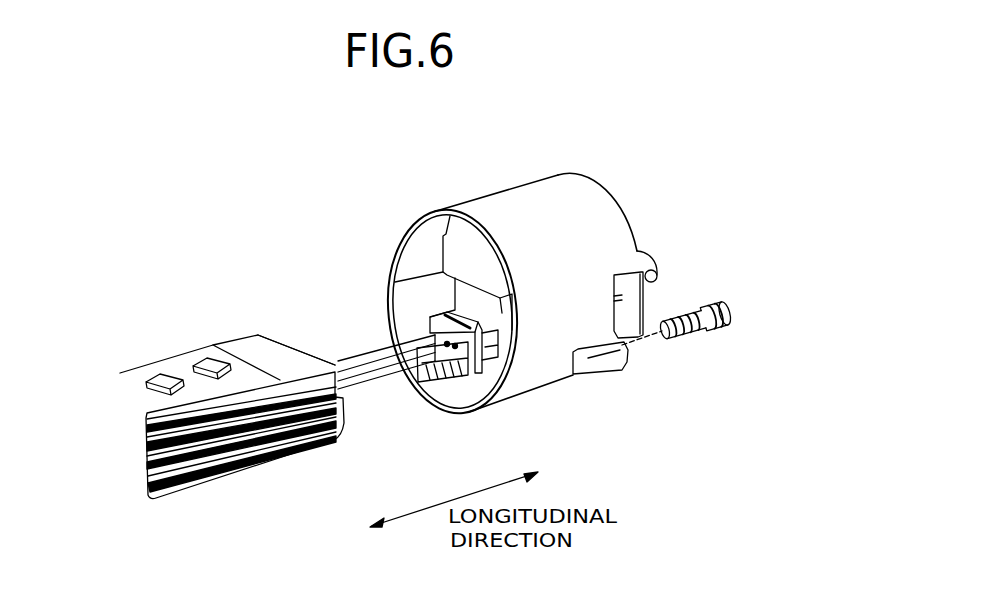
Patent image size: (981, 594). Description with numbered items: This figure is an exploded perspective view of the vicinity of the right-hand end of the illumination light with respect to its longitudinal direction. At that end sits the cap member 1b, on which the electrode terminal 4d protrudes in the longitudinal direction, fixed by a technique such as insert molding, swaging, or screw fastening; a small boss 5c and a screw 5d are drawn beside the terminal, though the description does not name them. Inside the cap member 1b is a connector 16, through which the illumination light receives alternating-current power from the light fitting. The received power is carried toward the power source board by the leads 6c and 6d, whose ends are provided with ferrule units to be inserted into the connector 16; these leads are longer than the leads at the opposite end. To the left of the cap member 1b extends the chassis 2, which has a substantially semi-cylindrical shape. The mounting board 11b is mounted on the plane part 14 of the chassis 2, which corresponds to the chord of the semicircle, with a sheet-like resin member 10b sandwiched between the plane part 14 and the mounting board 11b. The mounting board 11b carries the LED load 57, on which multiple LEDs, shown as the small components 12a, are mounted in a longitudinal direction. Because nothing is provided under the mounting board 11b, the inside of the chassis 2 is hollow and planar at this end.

The cap member 1b is at (522, 203).
The connector 16 is at (450, 313).
The lead 6d is at (393, 377).
The lead 6c is at (358, 353).
The boss 5c is at (641, 252).
The electrode terminal 4d is at (652, 272).
The screw 5d is at (697, 333).
The LED load 57 is at (213, 384).
The chassis 2 is at (152, 494).
The mounting board 11b is at (135, 385).
The plane part 14 is at (240, 352).
The sheet-like resin member 10b is at (280, 350).
The electronic components 12a is at (198, 362).